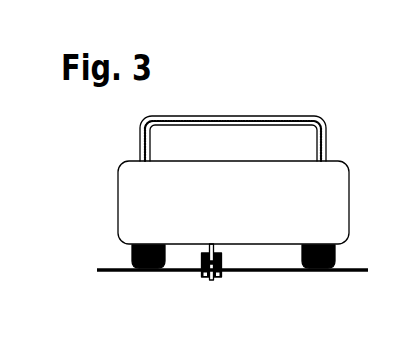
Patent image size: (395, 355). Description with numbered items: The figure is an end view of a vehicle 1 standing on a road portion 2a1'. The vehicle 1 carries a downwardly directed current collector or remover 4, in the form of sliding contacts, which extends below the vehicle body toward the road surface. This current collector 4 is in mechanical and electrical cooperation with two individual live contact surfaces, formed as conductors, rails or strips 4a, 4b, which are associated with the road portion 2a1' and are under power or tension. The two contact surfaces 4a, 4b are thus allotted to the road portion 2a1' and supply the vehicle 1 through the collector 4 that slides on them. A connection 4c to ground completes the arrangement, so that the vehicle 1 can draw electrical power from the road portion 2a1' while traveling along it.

The vehicle 1 is at (137, 183).
The road portion 2a1' is at (232, 288).
The current collector 4 is at (178, 267).
The contact surface 4a is at (218, 282).
The contact surface 4b is at (205, 281).
The connection to ground 4c is at (200, 267).